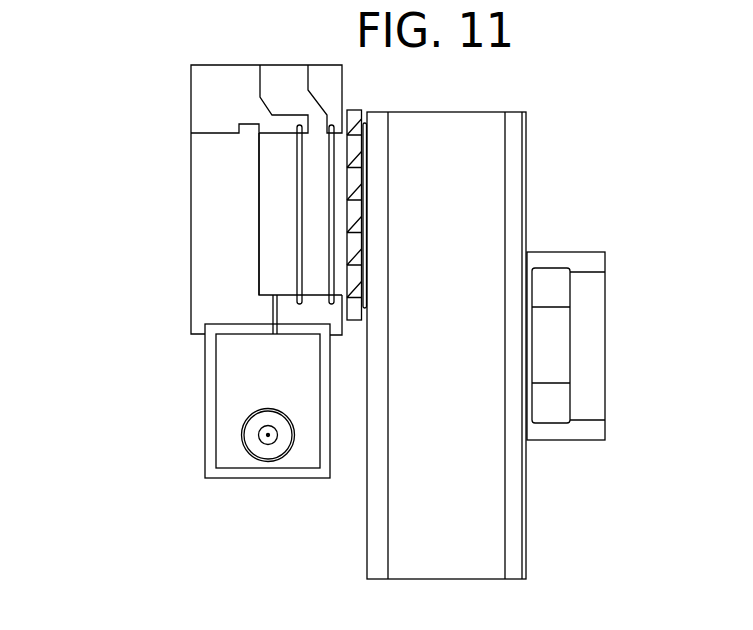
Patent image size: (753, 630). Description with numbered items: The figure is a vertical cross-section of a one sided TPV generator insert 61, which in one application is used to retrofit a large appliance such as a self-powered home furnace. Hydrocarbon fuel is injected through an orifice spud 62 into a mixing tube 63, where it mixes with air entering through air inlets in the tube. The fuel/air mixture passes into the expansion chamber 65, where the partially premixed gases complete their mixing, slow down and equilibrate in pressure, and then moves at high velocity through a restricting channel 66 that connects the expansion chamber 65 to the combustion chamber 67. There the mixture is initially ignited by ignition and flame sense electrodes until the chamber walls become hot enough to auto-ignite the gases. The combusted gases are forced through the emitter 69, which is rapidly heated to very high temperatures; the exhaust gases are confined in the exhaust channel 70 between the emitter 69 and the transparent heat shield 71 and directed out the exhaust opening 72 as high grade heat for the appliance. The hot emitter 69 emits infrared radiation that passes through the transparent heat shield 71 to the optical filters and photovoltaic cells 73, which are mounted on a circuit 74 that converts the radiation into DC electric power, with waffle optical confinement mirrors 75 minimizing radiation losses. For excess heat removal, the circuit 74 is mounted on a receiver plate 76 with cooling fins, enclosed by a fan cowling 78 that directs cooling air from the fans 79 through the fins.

The one sided TPV generator insert 61 is at (110, 475).
The orifice spud 62 is at (271, 440).
The mixing tube 63 is at (262, 458).
The expansion chamber 65 is at (235, 388).
The restricting channel 66 is at (275, 313).
The combustion chamber 67 is at (283, 250).
The emitter 69 is at (300, 223).
The exhaust channel 70 is at (315, 208).
The transparent heat shield 71 is at (333, 178).
The exhaust opening 72 is at (292, 88).
The optical filters and photovoltaic cells 73 is at (363, 246).
The circuit 74 is at (363, 168).
The waffle optical confinement mirrors 75 is at (355, 150).
The receiver plate 76 is at (378, 262).
The fan cowling 78 is at (525, 233).
The fans 79 is at (557, 328).